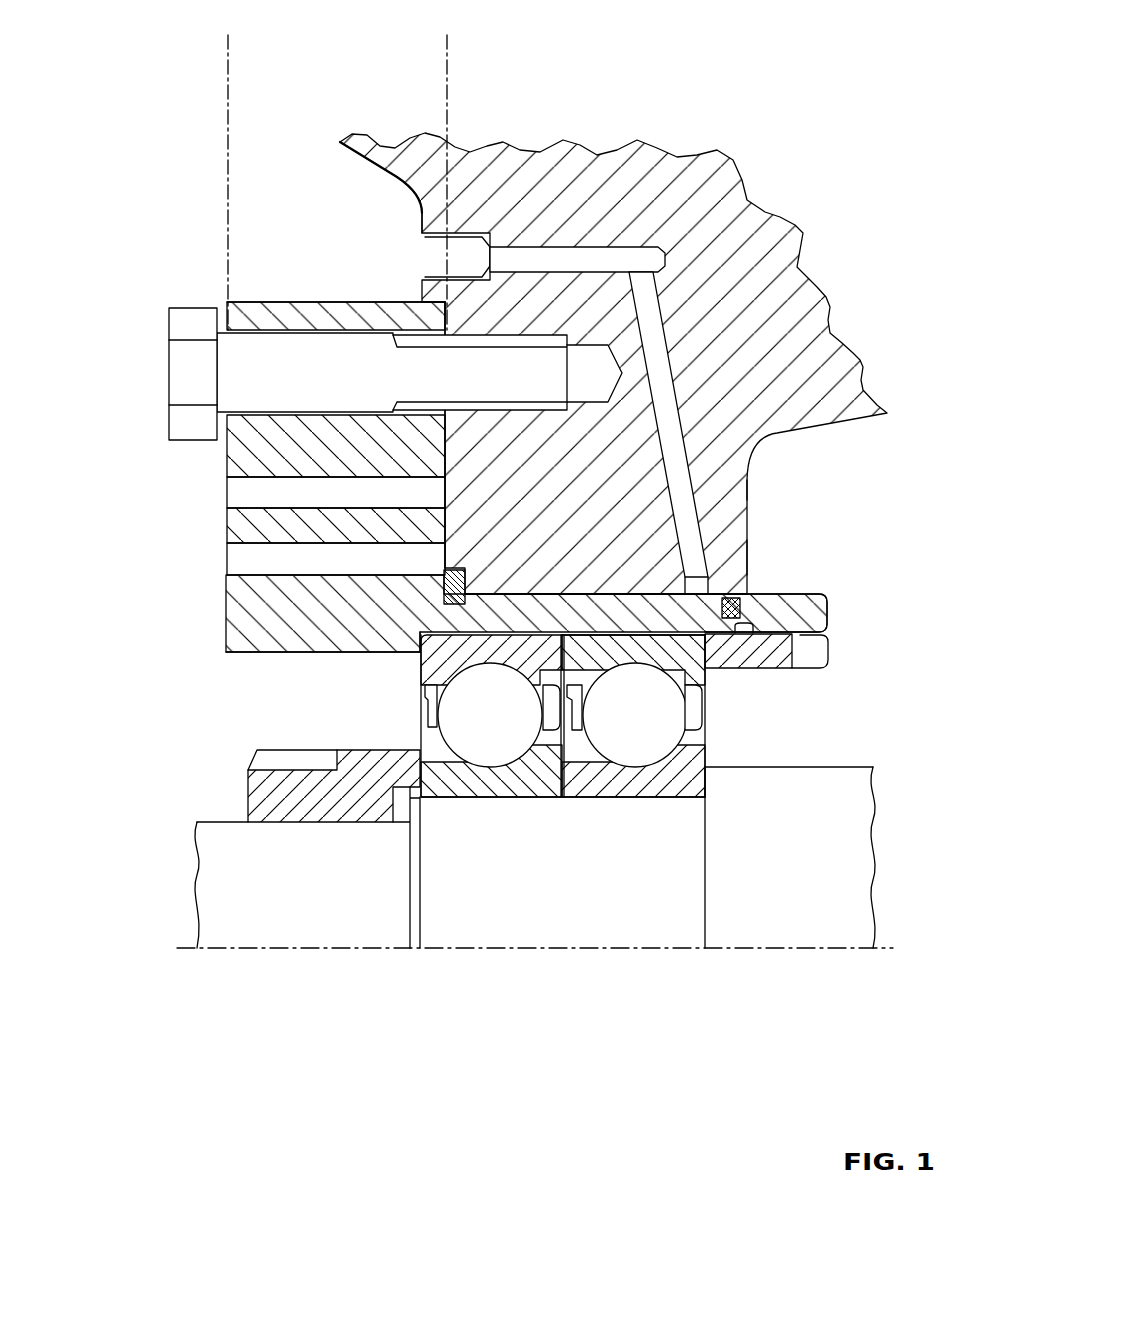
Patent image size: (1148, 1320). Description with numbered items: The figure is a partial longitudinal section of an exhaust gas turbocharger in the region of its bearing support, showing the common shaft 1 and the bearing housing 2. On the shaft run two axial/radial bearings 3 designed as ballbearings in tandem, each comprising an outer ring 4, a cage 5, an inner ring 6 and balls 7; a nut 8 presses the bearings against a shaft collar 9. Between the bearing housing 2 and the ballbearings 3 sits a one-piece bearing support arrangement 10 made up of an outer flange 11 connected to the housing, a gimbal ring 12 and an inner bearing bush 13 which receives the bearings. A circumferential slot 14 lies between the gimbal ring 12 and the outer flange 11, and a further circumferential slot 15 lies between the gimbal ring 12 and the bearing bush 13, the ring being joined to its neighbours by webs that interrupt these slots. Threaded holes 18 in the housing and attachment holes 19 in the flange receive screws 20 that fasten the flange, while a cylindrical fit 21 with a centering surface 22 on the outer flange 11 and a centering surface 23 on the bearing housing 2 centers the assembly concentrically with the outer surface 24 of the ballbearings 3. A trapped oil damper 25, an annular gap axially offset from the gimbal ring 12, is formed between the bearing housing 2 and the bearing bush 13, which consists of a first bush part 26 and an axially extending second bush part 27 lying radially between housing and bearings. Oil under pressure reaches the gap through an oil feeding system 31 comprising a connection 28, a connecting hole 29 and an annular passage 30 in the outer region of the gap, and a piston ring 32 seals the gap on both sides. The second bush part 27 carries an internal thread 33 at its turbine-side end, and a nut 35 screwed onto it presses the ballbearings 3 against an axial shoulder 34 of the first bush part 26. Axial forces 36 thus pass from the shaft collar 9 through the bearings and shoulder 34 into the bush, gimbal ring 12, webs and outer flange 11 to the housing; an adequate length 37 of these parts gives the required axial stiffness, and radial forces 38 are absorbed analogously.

The shaft 1 is at (823, 885).
The bearing housing 2 is at (729, 250).
The axial/radial bearings 3 is at (520, 728).
The outer ring 4 is at (448, 667).
The cage 5 is at (432, 695).
The inner ring 6 is at (458, 780).
The balls 7 is at (490, 717).
The nut 8 is at (343, 797).
The shaft collar 9 is at (705, 782).
The bearing support arrangement 10 is at (384, 454).
The outer flange 11 is at (293, 316).
The gimbal ring 12 is at (312, 527).
The bearing bush 13 is at (384, 624).
The circumferential slot 14 is at (280, 492).
The circumferential slot 15 is at (320, 560).
The threaded holes 18 is at (518, 330).
The attachment holes 19 is at (385, 327).
The screws 20 is at (315, 377).
The cylindrical fit 21 is at (292, 235).
The centering surface 22 is at (438, 302).
The centering surface 23 is at (438, 258).
The outer surface 24 is at (737, 603).
The trapped oil damper 25 is at (750, 482).
The first bush part 26 is at (317, 612).
The second bush part 27 is at (665, 637).
The connection 28 is at (420, 212).
The connecting hole 29 is at (657, 338).
The annular passage 30 is at (750, 557).
The oil feeding system 31 is at (606, 257).
The piston ring 32 is at (458, 583).
The internal thread 33 is at (770, 632).
The axial shoulder 34 is at (420, 650).
The nut 35 is at (747, 652).
The axial forces 36 is at (725, 1018).
The length 37 is at (435, 43).
The radial forces 38 is at (560, 858).